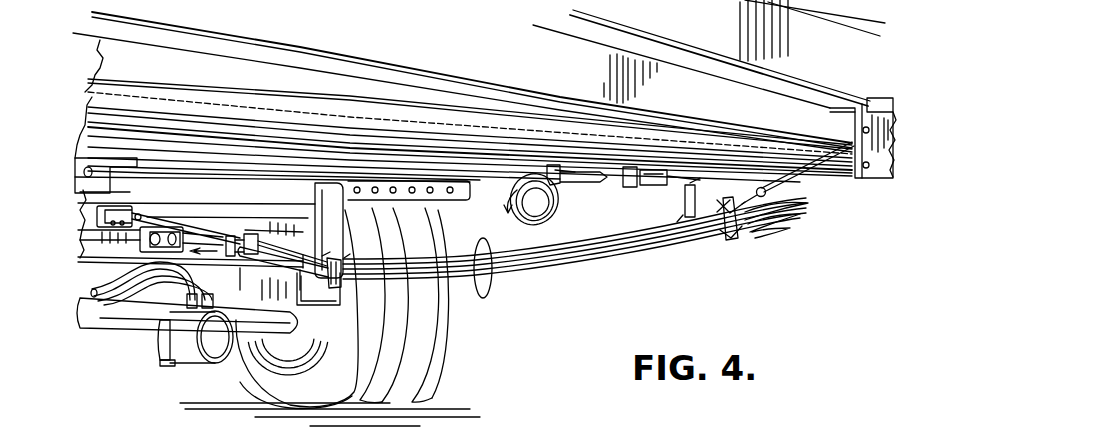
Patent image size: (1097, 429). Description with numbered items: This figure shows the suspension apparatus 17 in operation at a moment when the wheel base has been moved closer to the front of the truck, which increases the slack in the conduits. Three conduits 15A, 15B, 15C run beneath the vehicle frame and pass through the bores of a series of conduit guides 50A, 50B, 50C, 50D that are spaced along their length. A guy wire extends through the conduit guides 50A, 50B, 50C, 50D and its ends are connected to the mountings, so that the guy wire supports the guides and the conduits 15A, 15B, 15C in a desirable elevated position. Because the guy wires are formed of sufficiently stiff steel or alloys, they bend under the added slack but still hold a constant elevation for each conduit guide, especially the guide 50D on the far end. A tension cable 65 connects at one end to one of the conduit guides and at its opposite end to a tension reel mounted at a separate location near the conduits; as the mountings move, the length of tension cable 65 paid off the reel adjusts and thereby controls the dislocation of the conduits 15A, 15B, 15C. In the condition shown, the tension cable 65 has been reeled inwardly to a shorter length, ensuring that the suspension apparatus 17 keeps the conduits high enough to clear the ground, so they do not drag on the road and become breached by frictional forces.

The suspension apparatus 17 is at (484, 168).
The conduit guide 50A is at (247, 238).
The conduit guide 50B is at (337, 282).
The conduit guide 50C is at (738, 235).
The conduit guide 50D is at (645, 210).
The conduit 15A is at (574, 231).
The conduit 15B is at (574, 241).
The conduit 15C is at (571, 248).
The tension cable 65 is at (812, 177).